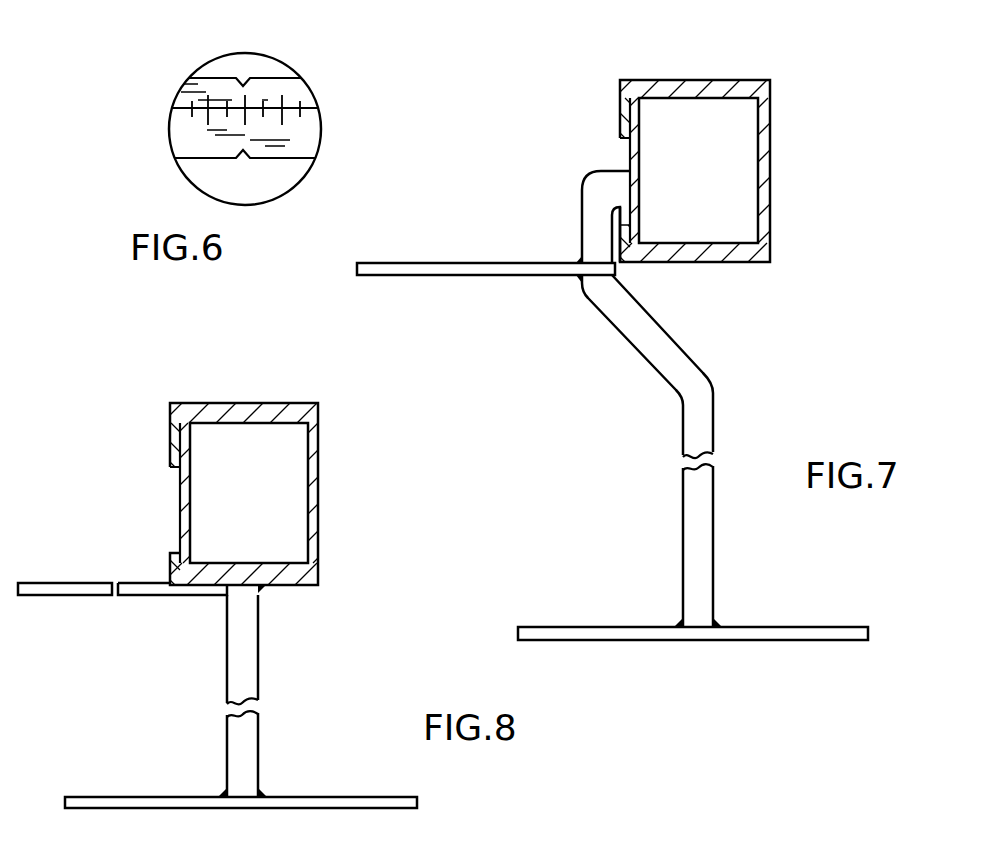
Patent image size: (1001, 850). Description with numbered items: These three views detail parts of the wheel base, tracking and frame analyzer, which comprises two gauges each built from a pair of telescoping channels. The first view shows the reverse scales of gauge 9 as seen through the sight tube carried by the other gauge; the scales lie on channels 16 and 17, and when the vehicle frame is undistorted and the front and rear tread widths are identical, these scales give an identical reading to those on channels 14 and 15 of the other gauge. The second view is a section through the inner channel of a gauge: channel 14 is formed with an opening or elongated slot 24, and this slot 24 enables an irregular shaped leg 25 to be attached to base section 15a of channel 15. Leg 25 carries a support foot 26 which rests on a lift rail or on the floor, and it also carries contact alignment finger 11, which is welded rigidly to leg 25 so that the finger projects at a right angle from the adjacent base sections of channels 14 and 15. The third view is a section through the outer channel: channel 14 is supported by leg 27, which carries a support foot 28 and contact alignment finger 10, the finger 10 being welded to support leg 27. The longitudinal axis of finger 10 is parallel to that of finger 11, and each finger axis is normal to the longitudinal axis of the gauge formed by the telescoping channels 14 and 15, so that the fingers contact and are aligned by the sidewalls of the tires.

In FIG. 6, the gauge 9 is at (168, 85).
In FIG. 6, the channel 16 is at (300, 92).
In FIG. 6, the channel 17 is at (305, 142).
In FIG. 8, the contact alignment finger 10 is at (67, 590).
In FIG. 7, the contact alignment finger 11 is at (440, 263).
In FIG. 7, the channel 14 is at (765, 130).
In FIG. 8, the channel 14 is at (317, 465).
In FIG. 7, the channel 15 is at (693, 95).
In FIG. 8, the channel 15 is at (257, 412).
In FIG. 7, the base section 15a is at (640, 180).
In FIG. 8, the base section 15a is at (185, 493).
In FIG. 7, the elongated slot 24 is at (623, 157).
In FIG. 8, the elongated slot 24 is at (173, 497).
In FIG. 7, the support leg 25 is at (667, 365).
In FIG. 7, the support foot 26 is at (602, 630).
In FIG. 8, the support leg 27 is at (250, 672).
In FIG. 8, the support foot 28 is at (338, 800).